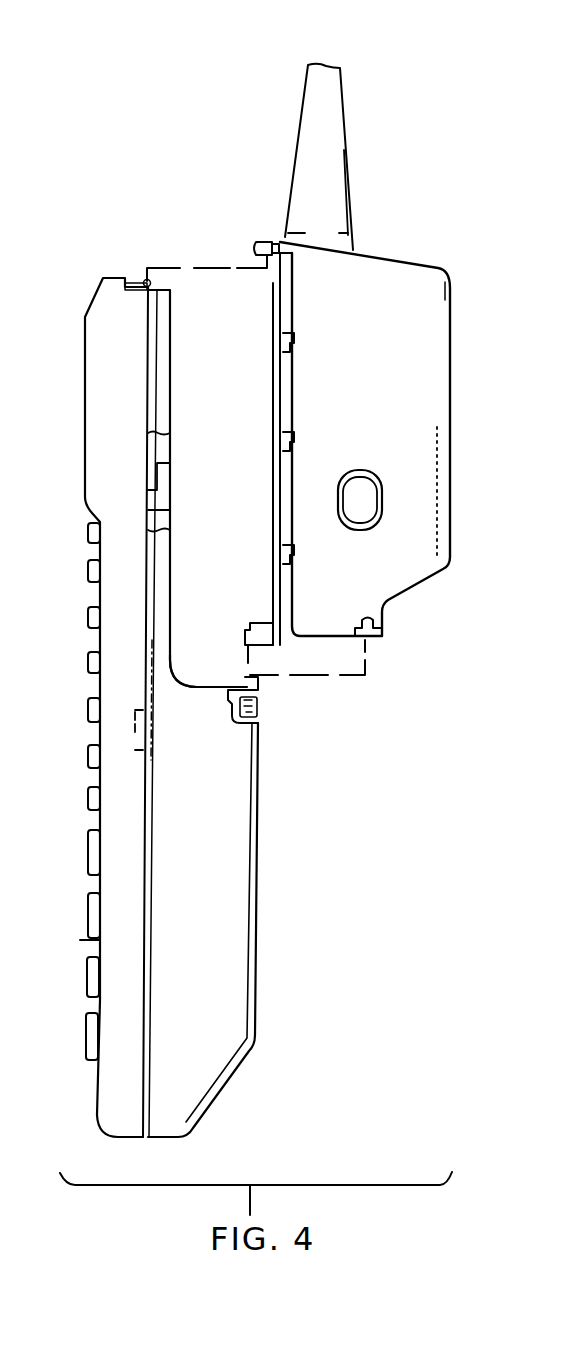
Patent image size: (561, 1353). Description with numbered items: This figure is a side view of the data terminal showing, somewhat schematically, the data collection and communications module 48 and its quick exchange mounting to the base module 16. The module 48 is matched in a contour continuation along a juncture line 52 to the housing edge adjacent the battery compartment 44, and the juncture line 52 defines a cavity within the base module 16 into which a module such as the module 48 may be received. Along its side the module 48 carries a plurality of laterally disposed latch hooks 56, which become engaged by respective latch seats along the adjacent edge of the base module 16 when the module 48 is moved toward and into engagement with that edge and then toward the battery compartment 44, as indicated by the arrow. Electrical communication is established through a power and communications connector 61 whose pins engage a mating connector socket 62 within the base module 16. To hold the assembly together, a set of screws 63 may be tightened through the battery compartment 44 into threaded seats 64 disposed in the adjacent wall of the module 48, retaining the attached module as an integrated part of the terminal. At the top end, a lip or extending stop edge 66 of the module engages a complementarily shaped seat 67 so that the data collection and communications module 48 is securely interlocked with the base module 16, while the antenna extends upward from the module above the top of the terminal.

The base module 16 is at (118, 762).
The battery compartment 44 is at (240, 873).
The data collection and communications module 48 is at (430, 412).
The juncture line 52 is at (218, 684).
The latch hooks 56 is at (294, 345).
The power and communications connector 61 is at (247, 656).
The connector socket 62 is at (150, 745).
The screws 63 is at (255, 710).
The threaded seats 64 is at (390, 607).
The stop edge 66 is at (254, 246).
The seat 67 is at (133, 281).